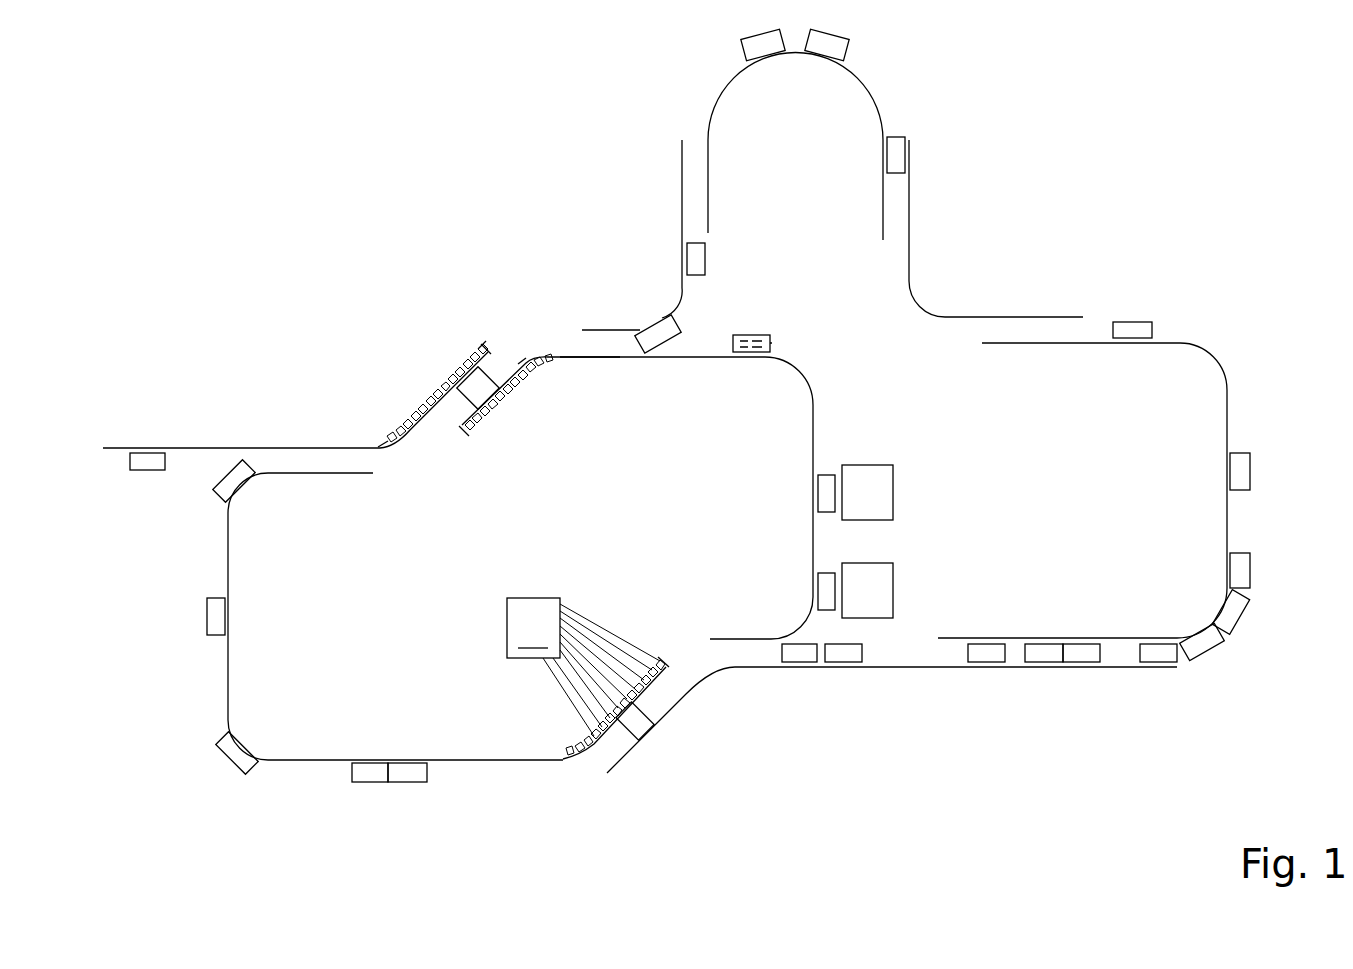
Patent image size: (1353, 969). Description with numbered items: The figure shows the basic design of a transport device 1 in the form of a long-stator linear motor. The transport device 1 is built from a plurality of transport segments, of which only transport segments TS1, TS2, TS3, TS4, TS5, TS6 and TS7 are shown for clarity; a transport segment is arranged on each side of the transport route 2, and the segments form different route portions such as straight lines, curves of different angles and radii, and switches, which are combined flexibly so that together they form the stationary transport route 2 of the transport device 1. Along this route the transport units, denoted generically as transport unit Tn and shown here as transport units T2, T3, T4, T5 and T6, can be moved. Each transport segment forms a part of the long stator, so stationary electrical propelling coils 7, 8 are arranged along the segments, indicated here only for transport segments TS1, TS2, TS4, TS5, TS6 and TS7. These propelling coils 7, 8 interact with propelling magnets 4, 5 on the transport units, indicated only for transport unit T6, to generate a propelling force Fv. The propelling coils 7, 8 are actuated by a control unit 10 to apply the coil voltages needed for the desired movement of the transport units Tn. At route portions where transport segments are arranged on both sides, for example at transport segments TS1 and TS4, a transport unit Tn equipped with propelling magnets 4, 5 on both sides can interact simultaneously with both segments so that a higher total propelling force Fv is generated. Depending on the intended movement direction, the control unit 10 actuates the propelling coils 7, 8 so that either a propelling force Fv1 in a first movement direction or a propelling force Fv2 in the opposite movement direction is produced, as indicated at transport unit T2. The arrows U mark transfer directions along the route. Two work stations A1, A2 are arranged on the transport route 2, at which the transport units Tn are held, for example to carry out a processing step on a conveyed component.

The transport device 1 is at (1028, 785).
The transport route 2 is at (482, 825).
The propelling magnet 4 is at (752, 335).
The propelling magnet 5 is at (752, 353).
The propelling coil 7 is at (413, 395).
The propelling coil 8 is at (535, 365).
The control unit 10 is at (583, 667).
The transport unit Tn is at (143, 452).
The transport unit T2 is at (207, 615).
The transport unit T3 is at (232, 752).
The transport unit T4 is at (380, 775).
The transport unit T5 is at (800, 656).
The transport unit T6 is at (775, 343).
The transport segment TS1 is at (462, 418).
The transport segment TS2 is at (521, 360).
The transport segment TS3 is at (590, 360).
The transport segment TS4 is at (481, 345).
The transport segment TS5 is at (412, 440).
The transport segment TS6 is at (580, 758).
The transport segment TS7 is at (653, 680).
The transfer direction U is at (454, 365).
The propelling force Fv is at (780, 345).
The propelling force in first movement direction Fv1 is at (215, 598).
The propelling force in second movement direction Fv2 is at (215, 635).
The work station A1 is at (867, 492).
The work station A2 is at (867, 590).